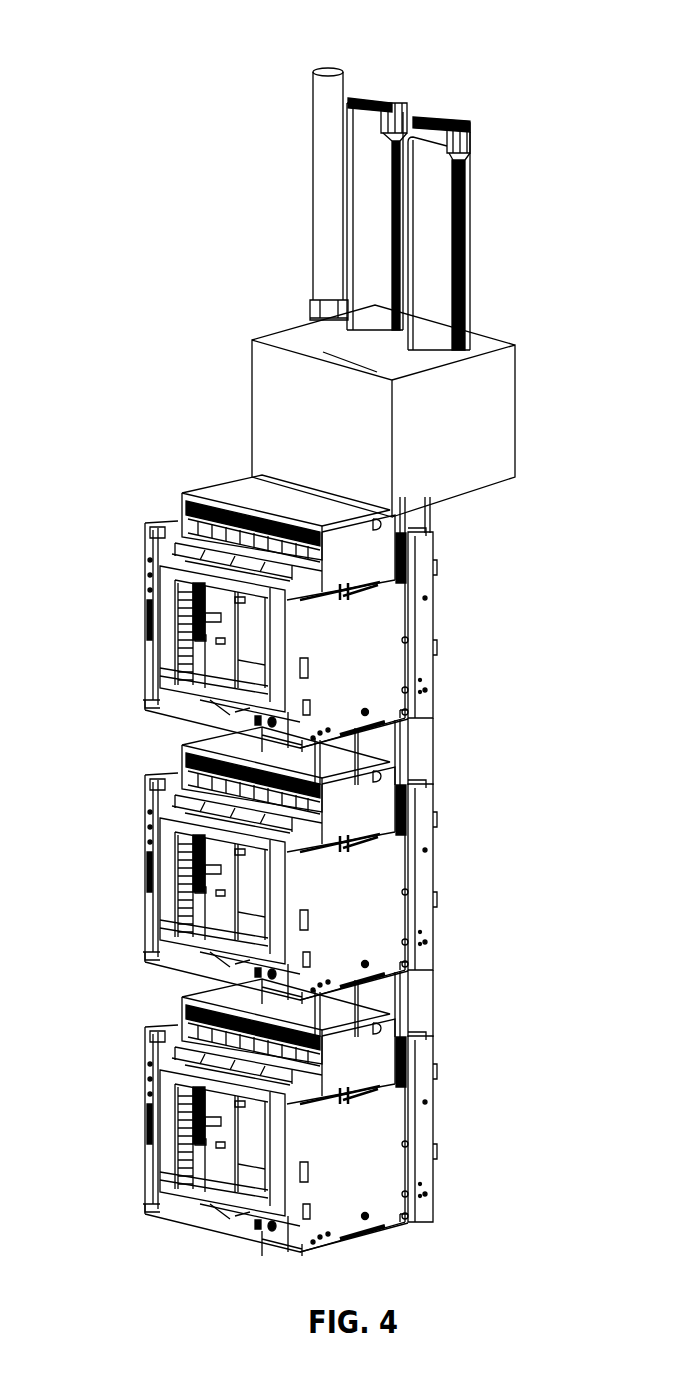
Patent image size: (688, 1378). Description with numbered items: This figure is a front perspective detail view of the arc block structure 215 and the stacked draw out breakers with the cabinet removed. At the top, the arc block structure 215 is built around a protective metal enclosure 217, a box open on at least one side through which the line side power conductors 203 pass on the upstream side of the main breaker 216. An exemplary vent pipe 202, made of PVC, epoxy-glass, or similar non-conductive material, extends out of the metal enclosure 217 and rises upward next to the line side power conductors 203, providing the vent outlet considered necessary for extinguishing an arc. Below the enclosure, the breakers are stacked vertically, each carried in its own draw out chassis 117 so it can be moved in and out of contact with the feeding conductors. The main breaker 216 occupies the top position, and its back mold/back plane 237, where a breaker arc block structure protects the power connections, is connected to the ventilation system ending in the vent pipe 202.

The vent pipe 202 is at (330, 133).
The line side power conductors 203 is at (383, 102).
The arc block structure 215 is at (355, 445).
The metal enclosure 217 is at (472, 440).
The draw out chassis 117 is at (274, 865).
The main breaker 216 is at (170, 634).
The back mold/back plane 237 is at (420, 728).